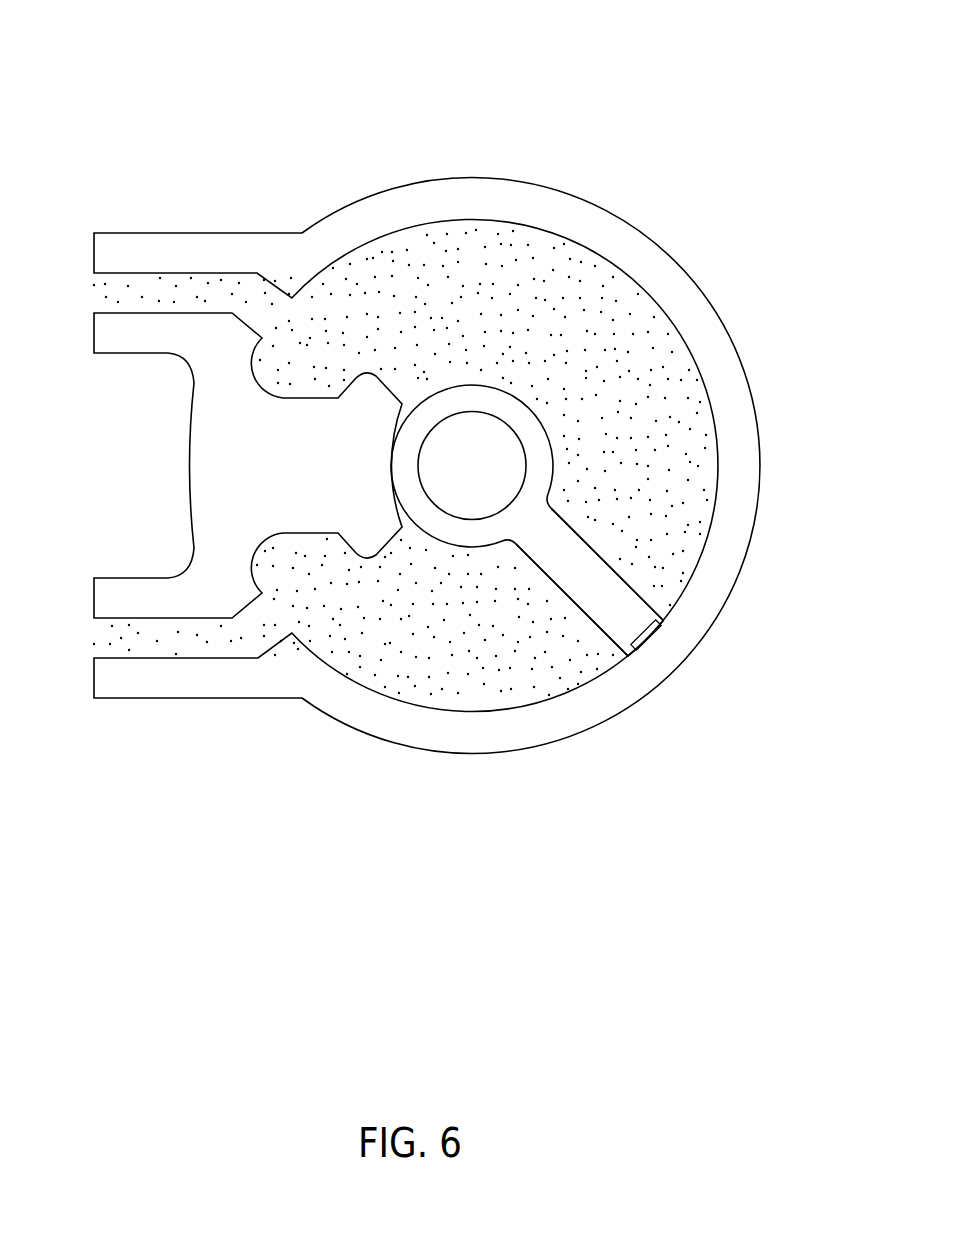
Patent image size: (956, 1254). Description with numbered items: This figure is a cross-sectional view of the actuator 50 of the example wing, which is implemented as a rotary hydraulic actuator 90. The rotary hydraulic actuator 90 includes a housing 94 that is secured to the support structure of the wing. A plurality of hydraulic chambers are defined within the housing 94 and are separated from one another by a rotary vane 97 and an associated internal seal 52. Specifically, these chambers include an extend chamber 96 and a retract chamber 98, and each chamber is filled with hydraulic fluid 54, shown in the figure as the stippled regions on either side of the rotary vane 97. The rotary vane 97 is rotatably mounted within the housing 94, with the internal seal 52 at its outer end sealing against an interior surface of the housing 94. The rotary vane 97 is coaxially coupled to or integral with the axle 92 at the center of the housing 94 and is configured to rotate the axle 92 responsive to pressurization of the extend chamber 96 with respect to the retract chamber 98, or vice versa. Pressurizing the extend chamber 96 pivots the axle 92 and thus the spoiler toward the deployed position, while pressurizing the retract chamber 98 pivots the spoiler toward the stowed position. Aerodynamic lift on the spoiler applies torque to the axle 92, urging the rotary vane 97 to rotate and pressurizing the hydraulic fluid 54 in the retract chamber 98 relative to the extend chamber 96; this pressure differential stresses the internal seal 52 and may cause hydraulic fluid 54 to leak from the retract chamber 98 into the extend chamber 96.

The actuator 50 is at (700, 63).
The rotary hydraulic actuator 90 is at (688, 113).
The housing 94 is at (683, 265).
The extend chamber 96 is at (489, 317).
The retract chamber 98 is at (489, 646).
The axle 92 is at (508, 422).
The rotary vane 97 is at (568, 525).
The internal seal 52 is at (640, 634).
The hydraulic fluid 54 is at (400, 439).